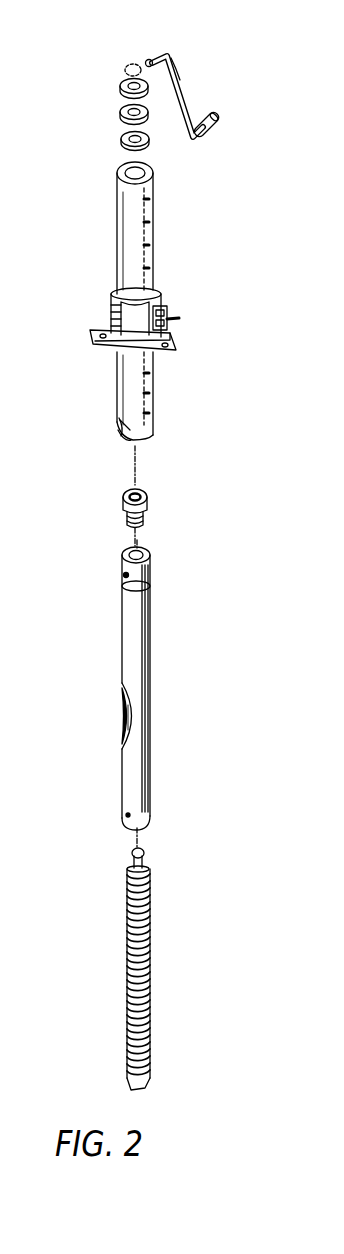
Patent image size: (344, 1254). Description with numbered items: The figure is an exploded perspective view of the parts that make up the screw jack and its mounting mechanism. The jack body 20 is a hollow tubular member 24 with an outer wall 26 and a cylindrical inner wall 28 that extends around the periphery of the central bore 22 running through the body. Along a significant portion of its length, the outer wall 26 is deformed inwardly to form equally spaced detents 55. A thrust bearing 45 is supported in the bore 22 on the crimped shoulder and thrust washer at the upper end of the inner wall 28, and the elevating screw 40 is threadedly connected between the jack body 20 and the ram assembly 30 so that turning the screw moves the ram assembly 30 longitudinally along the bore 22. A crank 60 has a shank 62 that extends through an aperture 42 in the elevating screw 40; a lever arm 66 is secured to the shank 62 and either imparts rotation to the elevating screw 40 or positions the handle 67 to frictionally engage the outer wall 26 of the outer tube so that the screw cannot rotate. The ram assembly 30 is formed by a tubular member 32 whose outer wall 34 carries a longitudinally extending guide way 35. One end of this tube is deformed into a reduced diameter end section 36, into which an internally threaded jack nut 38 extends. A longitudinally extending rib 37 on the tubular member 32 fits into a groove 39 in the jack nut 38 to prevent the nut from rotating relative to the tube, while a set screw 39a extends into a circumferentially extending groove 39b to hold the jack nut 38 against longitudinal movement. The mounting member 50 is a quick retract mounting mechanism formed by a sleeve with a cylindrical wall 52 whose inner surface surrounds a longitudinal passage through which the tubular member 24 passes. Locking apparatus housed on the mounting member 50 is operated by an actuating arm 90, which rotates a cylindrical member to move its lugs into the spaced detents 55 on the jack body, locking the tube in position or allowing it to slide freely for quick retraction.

The jack body 20 is at (140, 309).
The central bore 22 is at (132, 438).
The tubular member 24 is at (119, 422).
The outer wall 26 is at (120, 430).
The inner wall 28 is at (122, 423).
The ram assembly 30 is at (120, 686).
The tubular member 32 is at (120, 807).
The outer wall 34 is at (124, 705).
The guide way 35 is at (151, 677).
The reduced diameter end section 36 is at (152, 582).
The rib 37 is at (149, 552).
The jack nut 38 is at (146, 504).
The groove 39 is at (127, 518).
The set screw 39a is at (115, 579).
The circumferentially extending groove 39b is at (144, 518).
The elevating screw 40 is at (126, 932).
The aperture 42 is at (124, 70).
The thrust bearing 45 is at (121, 113).
The mounting member 50 is at (142, 306).
The cylindrical wall 52 is at (118, 294).
The detents 55 is at (149, 218).
The crank 60 is at (163, 44).
The shank 62 is at (149, 59).
The lever arm 66 is at (181, 80).
The handle 67 is at (195, 116).
The actuating arm 90 is at (169, 318).